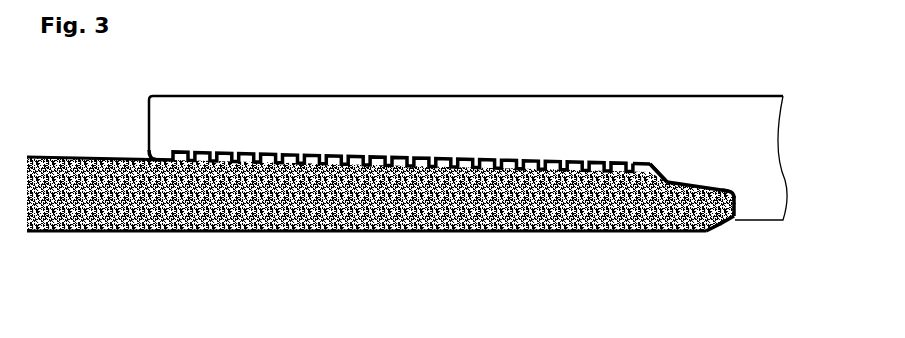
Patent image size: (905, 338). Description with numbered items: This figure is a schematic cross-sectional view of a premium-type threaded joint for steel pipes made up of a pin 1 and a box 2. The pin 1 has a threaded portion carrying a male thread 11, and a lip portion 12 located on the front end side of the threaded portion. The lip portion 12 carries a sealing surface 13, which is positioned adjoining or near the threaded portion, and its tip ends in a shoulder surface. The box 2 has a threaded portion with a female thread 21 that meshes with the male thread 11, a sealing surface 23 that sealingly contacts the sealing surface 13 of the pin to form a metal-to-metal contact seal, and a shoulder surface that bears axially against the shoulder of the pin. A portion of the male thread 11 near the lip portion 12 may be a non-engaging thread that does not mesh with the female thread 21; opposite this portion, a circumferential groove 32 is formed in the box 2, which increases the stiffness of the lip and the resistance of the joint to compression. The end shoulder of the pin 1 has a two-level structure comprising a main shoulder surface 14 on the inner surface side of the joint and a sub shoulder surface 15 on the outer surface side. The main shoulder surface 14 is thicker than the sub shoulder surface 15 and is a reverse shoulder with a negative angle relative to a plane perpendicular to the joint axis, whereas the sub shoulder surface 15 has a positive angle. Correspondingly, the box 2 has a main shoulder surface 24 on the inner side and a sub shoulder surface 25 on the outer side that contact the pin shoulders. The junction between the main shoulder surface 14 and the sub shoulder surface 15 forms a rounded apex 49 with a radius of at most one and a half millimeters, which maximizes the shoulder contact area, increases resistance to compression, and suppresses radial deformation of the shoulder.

The pin 1 is at (419, 212).
The box 2 is at (468, 130).
The male thread 11 is at (398, 170).
The lip portion 12 is at (665, 220).
The sealing surface 13 is at (668, 182).
The main shoulder surface 14 is at (734, 218).
The sub shoulder surface 15 is at (730, 199).
The female thread 21 is at (408, 163).
The sealing surface 23 is at (668, 181).
The main shoulder surface 24 is at (734, 210).
The sub shoulder surface 25 is at (729, 192).
The circumferential groove 32 is at (628, 165).
The rounded apex 49 is at (734, 197).